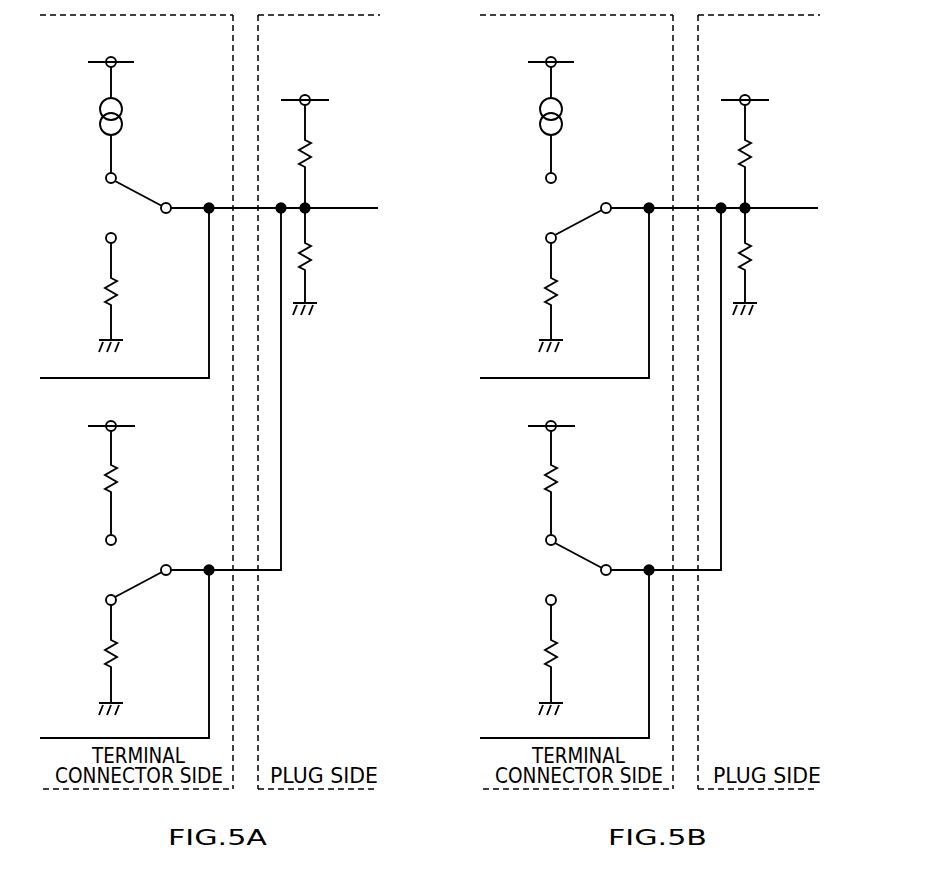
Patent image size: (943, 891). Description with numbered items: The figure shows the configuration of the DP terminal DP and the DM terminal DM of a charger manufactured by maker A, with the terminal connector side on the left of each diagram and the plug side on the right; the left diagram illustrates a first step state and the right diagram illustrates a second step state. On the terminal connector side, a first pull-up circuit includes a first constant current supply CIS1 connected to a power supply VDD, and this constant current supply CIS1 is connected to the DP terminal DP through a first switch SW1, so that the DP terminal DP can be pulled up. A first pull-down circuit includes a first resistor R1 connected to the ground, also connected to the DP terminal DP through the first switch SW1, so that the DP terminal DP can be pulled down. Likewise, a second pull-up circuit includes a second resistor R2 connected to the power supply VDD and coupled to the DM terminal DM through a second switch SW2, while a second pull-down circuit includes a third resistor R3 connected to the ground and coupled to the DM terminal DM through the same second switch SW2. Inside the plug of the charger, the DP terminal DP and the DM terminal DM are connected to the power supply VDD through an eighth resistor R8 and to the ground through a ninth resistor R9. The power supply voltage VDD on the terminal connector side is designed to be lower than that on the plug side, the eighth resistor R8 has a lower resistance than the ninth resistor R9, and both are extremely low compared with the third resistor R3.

In FIG. 5A, the power supply VDD is at (208, 231).
In FIG. 5B, the power supply VDD is at (648, 231).
In FIG. 5A, the first constant current supply CIS1 is at (136, 120).
In FIG. 5B, the first constant current supply CIS1 is at (576, 120).
In FIG. 5A, the first switch SW1 is at (124, 208).
In FIG. 5B, the first switch SW1 is at (564, 208).
In FIG. 5A, the second switch SW2 is at (124, 570).
In FIG. 5B, the second switch SW2 is at (564, 570).
In FIG. 5A, the first resistor R1 is at (122, 297).
In FIG. 5B, the first resistor R1 is at (562, 297).
In FIG. 5A, the second resistor R2 is at (125, 483).
In FIG. 5B, the second resistor R2 is at (565, 483).
In FIG. 5A, the third resistor R3 is at (123, 660).
In FIG. 5B, the third resistor R3 is at (563, 660).
In FIG. 5A, the eighth resistor R8 is at (318, 156).
In FIG. 5B, the eighth resistor R8 is at (758, 156).
In FIG. 5A, the ninth resistor R9 is at (316, 261).
In FIG. 5B, the ninth resistor R9 is at (756, 261).
In FIG. 5A, the DP terminal DP is at (274, 196).
In FIG. 5B, the DP terminal DP is at (714, 196).
In FIG. 5A, the DM terminal DM is at (226, 391).
In FIG. 5B, the DM terminal DM is at (666, 391).